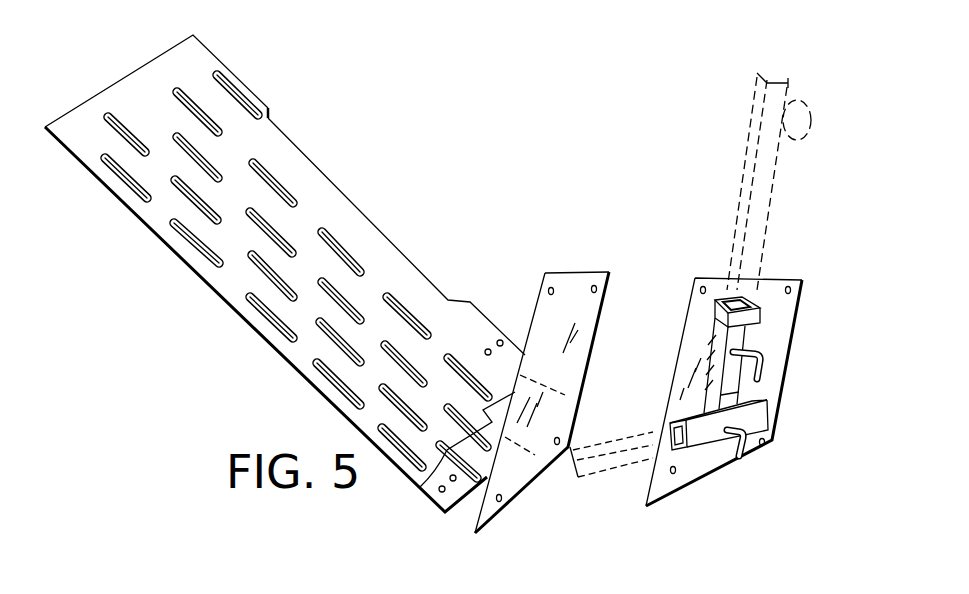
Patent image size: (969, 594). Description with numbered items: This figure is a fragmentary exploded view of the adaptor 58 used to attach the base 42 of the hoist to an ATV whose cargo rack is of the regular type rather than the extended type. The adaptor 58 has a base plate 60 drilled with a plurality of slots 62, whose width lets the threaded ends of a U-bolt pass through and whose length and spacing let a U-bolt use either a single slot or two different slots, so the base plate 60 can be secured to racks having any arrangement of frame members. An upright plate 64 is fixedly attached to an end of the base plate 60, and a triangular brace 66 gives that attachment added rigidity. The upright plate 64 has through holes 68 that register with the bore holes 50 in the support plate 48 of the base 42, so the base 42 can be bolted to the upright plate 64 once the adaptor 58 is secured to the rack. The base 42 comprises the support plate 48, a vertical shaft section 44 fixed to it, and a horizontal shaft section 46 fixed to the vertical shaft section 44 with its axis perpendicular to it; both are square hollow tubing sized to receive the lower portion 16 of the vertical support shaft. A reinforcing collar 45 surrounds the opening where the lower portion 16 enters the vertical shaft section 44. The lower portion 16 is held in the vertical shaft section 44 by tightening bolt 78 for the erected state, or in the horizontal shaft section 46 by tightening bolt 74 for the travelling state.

The lower portion 16 is at (760, 250).
The base 42 is at (790, 392).
The vertical shaft section 44 is at (744, 343).
The reinforcing collar 45 is at (762, 318).
The horizontal shaft section 46 is at (762, 423).
The support plate 48 is at (777, 369).
The bore holes 50 is at (700, 290).
The adaptor 58 is at (370, 200).
The base plate 60 is at (295, 160).
The slots 62 is at (270, 283).
The upright plate 64 is at (540, 318).
The triangular brace 66 is at (420, 486).
The through holes 68 is at (552, 286).
The bolt 74 is at (738, 458).
The bolt 78 is at (763, 374).